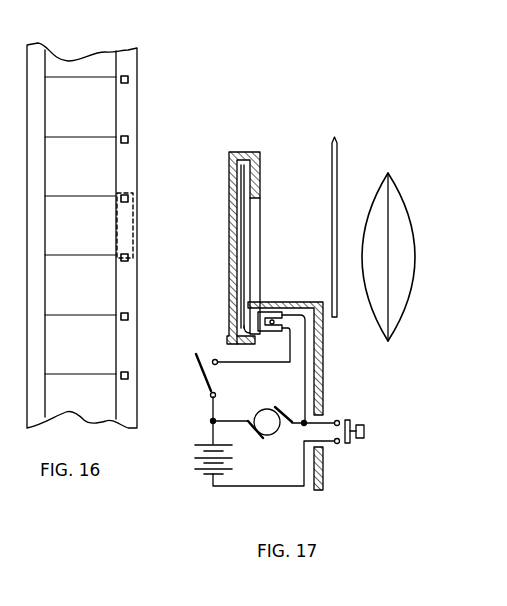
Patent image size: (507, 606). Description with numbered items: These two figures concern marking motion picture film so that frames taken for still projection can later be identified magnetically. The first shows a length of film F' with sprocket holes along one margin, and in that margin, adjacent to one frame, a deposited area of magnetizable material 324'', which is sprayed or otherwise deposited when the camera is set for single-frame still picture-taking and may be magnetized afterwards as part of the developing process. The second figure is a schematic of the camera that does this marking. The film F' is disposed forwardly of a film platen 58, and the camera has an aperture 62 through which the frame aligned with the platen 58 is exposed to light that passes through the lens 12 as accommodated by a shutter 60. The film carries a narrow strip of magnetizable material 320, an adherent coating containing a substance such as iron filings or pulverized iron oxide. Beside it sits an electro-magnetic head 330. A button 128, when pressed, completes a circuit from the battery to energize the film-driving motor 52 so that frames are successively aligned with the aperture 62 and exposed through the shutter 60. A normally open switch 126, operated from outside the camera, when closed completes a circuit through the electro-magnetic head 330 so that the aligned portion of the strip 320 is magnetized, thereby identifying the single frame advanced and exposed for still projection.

In FIG. 16, the film F' is at (129, 34).
In FIG. 17, the film F' is at (220, 246).
In FIG. 16, the deposited area of magnetizable material 324'' is at (94, 225).
In FIG. 17, the film platen 58 is at (248, 151).
In FIG. 17, the aperture 62 is at (258, 212).
In FIG. 17, the shutter 60 is at (338, 155).
In FIG. 17, the lens 12 is at (404, 190).
In FIG. 17, the electro-magnetic head 330 is at (270, 302).
In FIG. 17, the strip of magnetizable material 320 is at (245, 317).
In FIG. 17, the normally open switch 126 is at (196, 354).
In FIG. 17, the film-driving motor 52 is at (262, 408).
In FIG. 17, the button 128 is at (360, 424).